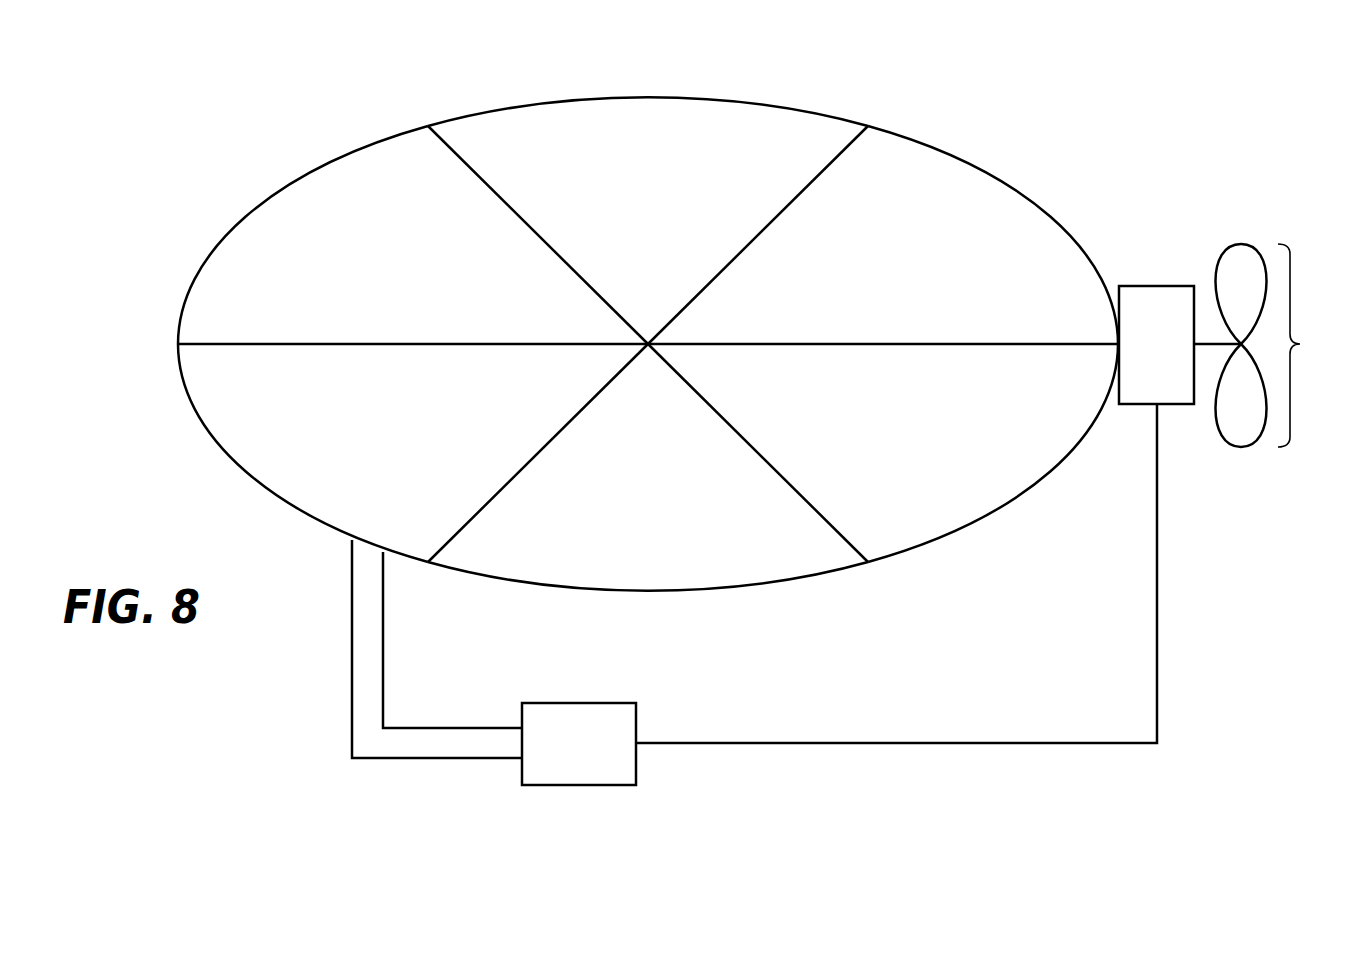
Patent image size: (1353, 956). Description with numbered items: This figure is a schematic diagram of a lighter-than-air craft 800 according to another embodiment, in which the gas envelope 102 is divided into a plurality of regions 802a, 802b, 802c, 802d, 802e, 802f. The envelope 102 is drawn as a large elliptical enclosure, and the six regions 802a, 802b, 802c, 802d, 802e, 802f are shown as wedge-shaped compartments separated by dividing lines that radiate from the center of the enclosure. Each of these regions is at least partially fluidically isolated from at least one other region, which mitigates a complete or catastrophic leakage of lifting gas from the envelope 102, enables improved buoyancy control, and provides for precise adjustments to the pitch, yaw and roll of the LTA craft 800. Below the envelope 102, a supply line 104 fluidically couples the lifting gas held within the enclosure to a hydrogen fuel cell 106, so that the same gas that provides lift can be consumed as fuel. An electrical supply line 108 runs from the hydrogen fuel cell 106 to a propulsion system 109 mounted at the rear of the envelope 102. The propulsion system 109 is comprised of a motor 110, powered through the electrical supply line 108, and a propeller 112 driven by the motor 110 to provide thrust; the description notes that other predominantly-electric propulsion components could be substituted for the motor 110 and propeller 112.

The LTA craft 800 is at (1123, 88).
The envelope 102 is at (360, 147).
The region 802a is at (648, 220).
The region 802b is at (883, 235).
The region 802c is at (883, 453).
The region 802d is at (648, 467).
The region 802e is at (413, 453).
The region 802f is at (413, 235).
The supply line 104 is at (352, 663).
The hydrogen fuel cell 106 is at (573, 785).
The electrical supply line 108 is at (962, 743).
The motor 110 is at (1160, 286).
The propulsion system 109 is at (1269, 366).
The propeller 112 is at (1240, 447).